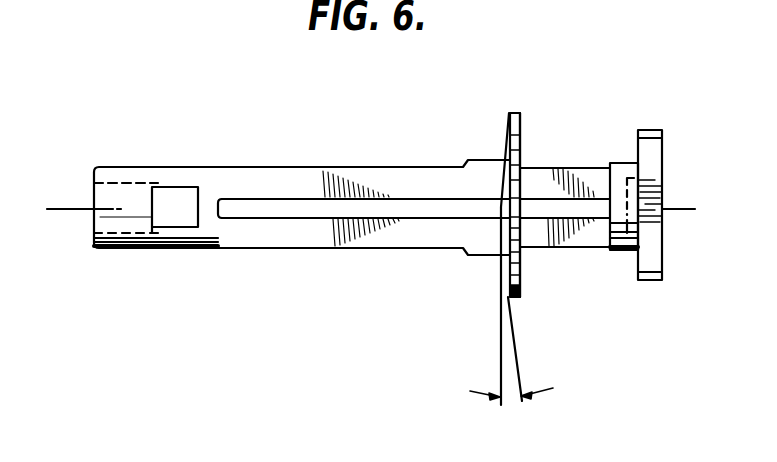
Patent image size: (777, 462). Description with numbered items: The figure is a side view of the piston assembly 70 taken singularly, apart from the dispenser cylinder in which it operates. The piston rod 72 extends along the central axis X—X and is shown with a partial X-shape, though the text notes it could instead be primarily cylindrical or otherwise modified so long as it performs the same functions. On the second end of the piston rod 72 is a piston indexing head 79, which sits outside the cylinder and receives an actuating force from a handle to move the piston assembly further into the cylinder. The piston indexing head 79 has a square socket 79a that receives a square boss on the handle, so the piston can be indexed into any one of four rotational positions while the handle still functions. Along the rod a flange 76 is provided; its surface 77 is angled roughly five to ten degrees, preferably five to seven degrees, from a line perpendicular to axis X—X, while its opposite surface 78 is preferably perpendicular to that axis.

The wobble shaft assembly 70 is at (310, 152).
The piston rod 72 is at (431, 197).
The flange 76 is at (512, 228).
The surface 77 is at (508, 140).
The opposite surface 78 is at (521, 142).
The piston indexing head 79 is at (637, 266).
The square socket 79a is at (652, 230).